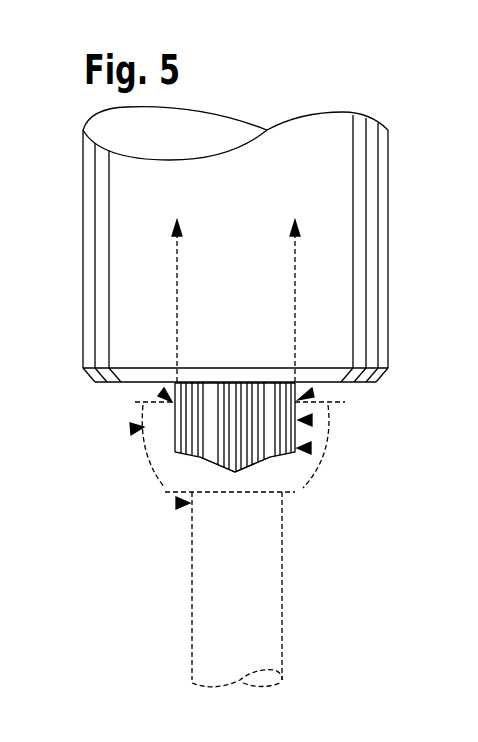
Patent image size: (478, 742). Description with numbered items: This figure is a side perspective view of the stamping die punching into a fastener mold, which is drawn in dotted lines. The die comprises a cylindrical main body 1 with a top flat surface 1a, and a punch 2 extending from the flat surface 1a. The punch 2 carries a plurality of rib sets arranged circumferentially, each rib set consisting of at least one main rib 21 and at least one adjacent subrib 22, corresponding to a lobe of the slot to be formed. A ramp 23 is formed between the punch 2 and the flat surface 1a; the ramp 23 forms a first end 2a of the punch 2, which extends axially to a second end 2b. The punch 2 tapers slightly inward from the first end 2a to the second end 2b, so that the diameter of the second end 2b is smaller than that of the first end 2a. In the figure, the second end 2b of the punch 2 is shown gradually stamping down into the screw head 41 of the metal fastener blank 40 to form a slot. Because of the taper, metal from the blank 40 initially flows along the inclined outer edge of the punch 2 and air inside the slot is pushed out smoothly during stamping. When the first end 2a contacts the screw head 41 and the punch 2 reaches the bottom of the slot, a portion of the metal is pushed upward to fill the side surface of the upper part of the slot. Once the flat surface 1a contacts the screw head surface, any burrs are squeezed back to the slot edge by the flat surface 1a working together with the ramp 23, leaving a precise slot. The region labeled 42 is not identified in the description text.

The main body 1 is at (108, 224).
The flat surface 1a is at (125, 386).
The punch 2 is at (312, 420).
The first end 2a is at (312, 393).
The second end 2b is at (312, 447).
The main rib 21 is at (198, 460).
The subrib 22 is at (265, 458).
The ramp 23 is at (192, 382).
The metal fastener blank 40 is at (175, 505).
The screw head 41 is at (130, 430).
The housing opening 42 is at (163, 396).